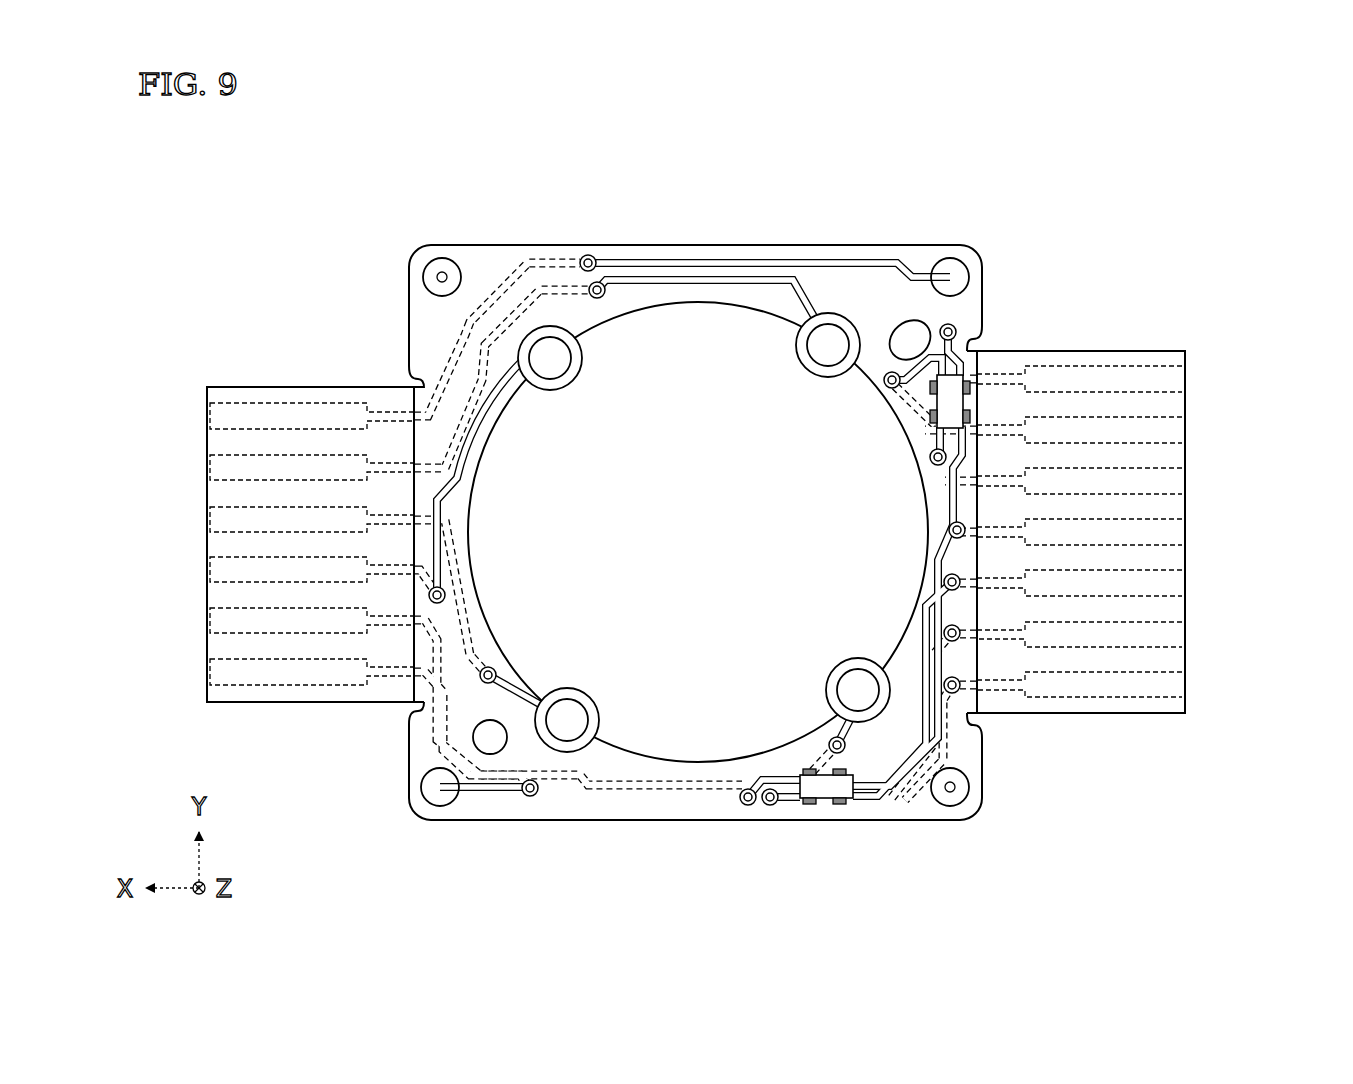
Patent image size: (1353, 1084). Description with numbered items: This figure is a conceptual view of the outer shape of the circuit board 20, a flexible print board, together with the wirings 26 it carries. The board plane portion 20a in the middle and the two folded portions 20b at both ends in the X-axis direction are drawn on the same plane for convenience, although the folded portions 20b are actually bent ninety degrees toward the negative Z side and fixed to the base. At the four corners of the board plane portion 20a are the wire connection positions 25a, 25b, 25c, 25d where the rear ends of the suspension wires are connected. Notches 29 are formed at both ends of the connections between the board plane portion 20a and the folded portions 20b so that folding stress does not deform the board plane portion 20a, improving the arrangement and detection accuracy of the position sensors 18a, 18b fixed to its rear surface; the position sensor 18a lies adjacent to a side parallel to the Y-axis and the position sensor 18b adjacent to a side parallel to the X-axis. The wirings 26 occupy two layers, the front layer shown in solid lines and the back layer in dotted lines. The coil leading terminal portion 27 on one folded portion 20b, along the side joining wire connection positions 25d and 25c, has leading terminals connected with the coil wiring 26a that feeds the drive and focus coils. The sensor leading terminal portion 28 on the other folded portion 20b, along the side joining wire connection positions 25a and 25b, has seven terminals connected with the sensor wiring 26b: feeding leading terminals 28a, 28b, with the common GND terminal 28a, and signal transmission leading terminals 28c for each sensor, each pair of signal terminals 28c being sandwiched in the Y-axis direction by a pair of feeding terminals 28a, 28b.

The circuit board 20 is at (699, 502).
The board plane portion 20a is at (770, 243).
The folded portion 20b is at (262, 703).
The wire connection position 25a is at (950, 277).
The wire connection position 25b is at (952, 787).
The wire connection position 25c is at (440, 787).
The wire connection position 25d is at (442, 277).
The wiring 26 is at (657, 261).
The coil wiring 26a is at (482, 310).
The sensor wiring 26b is at (875, 800).
The coil leading terminal portion 27 is at (292, 418).
The sensor leading terminal portion 28 is at (1131, 491).
The feeding leading terminal 28a is at (1155, 532).
The feeding leading terminal 28b is at (1155, 379).
The signal transmission leading terminal 28c is at (1155, 430).
The notch 29 is at (985, 340).
The position sensor 18a is at (968, 386).
The position sensor 18b is at (822, 800).